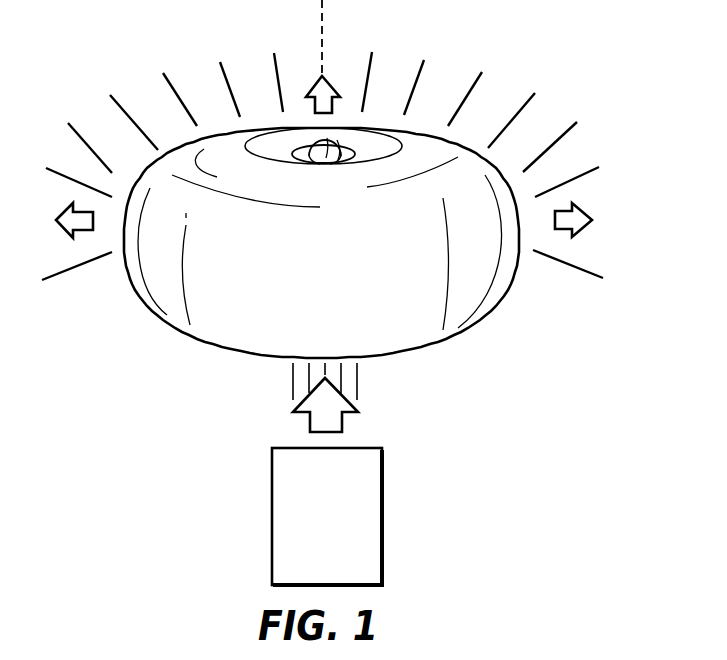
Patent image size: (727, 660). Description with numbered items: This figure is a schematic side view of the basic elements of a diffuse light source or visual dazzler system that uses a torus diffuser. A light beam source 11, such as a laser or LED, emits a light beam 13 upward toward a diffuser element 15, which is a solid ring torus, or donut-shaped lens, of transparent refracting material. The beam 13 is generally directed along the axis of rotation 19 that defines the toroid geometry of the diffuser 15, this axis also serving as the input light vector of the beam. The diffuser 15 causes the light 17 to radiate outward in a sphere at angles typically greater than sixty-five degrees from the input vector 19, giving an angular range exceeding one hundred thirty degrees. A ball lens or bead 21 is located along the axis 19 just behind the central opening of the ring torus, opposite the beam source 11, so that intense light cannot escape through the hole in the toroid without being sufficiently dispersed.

The light beam source 11 is at (383, 505).
The light beam 13 is at (343, 426).
The diffuser element 15 is at (425, 343).
The light 17 is at (169, 83).
The axis of rotation 19 is at (321, 50).
The ball lens or bead 21 is at (350, 137).